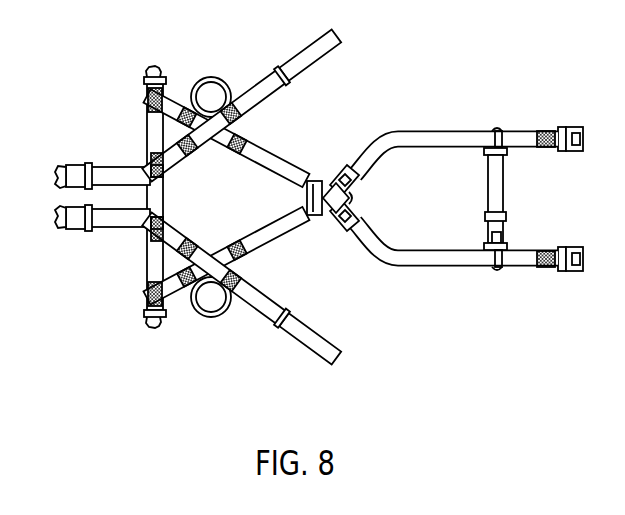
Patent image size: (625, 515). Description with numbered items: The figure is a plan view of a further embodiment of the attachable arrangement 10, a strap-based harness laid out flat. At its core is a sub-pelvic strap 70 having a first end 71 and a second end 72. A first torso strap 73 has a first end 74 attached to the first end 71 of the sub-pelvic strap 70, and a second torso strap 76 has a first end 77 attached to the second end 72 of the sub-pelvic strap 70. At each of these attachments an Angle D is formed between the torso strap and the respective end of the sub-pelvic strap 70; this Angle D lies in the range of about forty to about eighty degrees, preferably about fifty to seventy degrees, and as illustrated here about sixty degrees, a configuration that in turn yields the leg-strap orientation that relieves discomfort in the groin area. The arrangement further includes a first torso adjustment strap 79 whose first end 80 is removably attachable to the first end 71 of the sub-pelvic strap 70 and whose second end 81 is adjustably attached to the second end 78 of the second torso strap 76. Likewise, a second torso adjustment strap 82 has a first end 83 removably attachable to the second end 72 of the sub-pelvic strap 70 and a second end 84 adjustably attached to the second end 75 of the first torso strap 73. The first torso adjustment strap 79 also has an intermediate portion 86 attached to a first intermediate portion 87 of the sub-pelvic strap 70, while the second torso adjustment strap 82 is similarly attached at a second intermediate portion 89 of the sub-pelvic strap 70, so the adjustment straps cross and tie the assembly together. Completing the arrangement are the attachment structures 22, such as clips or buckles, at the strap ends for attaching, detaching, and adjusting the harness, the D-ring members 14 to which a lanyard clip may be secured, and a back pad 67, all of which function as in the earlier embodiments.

The attachable arrangement 10 is at (408, 83).
The D-ring member 14 is at (215, 78).
The attachment structure 22 is at (157, 66).
The back pad 67 is at (316, 176).
The sub-pelvic strap 70 is at (166, 193).
The first end of sub-pelvic strap 71 is at (138, 95).
The second end of sub-pelvic strap 72 is at (141, 301).
The first torso strap 73 is at (273, 155).
The first end of first torso strap 74 is at (176, 94).
The second end of first torso strap 75 is at (540, 275).
The second torso strap 76 is at (273, 240).
The first end of second torso strap 77 is at (178, 302).
The second end of second torso strap 78 is at (540, 126).
The first torso adjustment strap 79 is at (262, 81).
The first end of first torso adjustment strap 80 is at (65, 157).
The second end of first torso adjustment strap 81 is at (324, 59).
The second torso adjustment strap 82 is at (276, 300).
The first end of second torso adjustment strap 83 is at (68, 236).
The second end of second torso adjustment strap 84 is at (331, 338).
The intermediate portion of first torso adjustment strap 86 is at (168, 173).
The first intermediate portion of sub-pelvic strap 87 is at (147, 151).
The second intermediate portion of sub-pelvic strap 89 is at (142, 234).
The Angle D is at (167, 122).